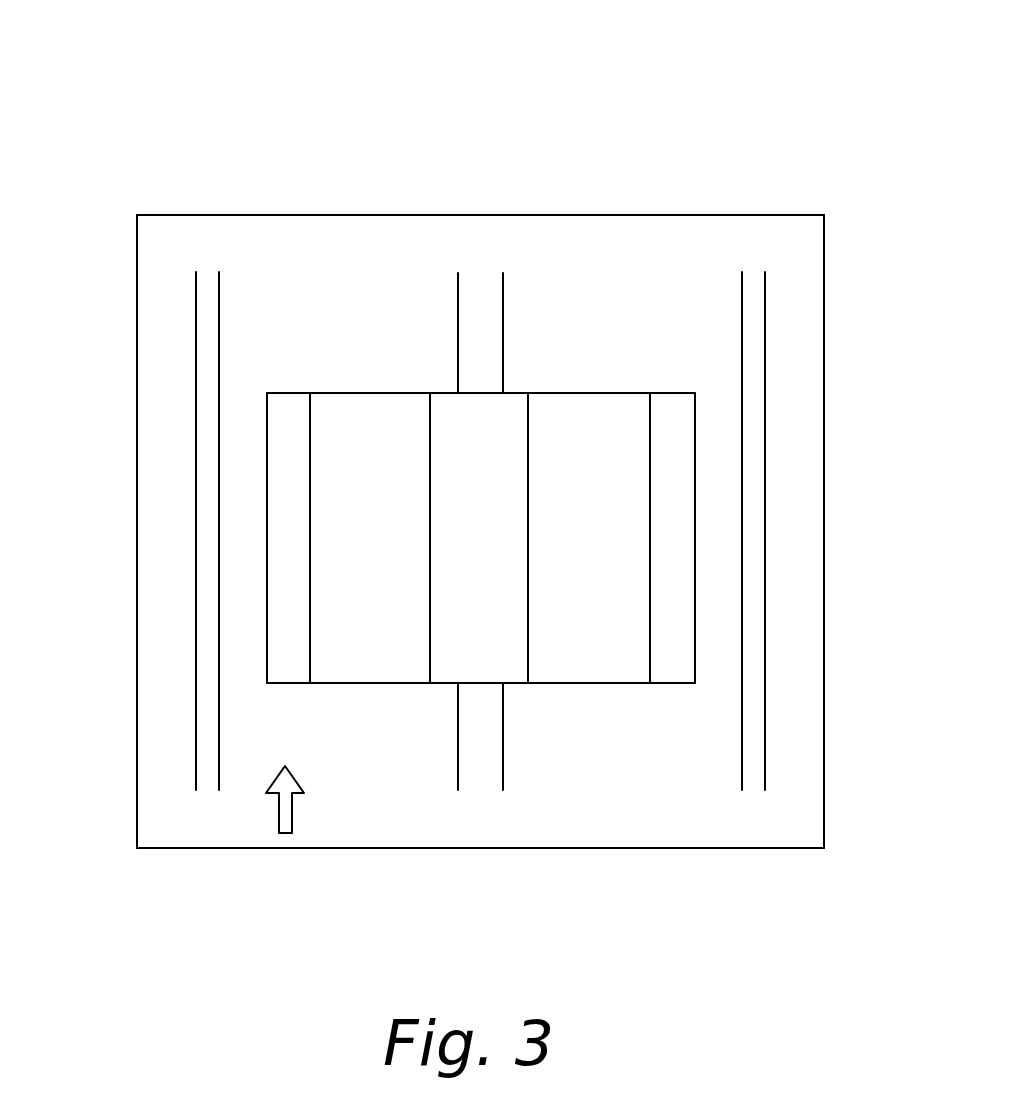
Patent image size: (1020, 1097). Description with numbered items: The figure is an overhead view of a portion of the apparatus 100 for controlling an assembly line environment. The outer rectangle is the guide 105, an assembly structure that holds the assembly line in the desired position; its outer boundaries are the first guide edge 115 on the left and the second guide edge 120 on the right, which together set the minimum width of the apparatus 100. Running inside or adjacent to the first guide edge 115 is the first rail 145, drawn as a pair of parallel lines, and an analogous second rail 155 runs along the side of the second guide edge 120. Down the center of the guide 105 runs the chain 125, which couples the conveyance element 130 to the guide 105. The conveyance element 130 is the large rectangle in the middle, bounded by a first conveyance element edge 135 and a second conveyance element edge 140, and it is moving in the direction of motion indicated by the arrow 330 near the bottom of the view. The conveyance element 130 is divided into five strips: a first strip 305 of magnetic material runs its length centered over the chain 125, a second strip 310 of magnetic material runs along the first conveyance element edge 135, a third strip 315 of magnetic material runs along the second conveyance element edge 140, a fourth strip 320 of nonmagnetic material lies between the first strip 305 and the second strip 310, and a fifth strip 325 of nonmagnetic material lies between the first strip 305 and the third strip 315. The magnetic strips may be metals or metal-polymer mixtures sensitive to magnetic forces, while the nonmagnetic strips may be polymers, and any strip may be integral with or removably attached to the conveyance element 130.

The apparatus 100 is at (470, 430).
The guide 105 is at (470, 493).
The first guide edge 115 is at (137, 281).
The second guide edge 120 is at (824, 297).
The chain 125 is at (458, 312).
The conveyance element 130 is at (475, 533).
The first conveyance element edge 135 is at (267, 558).
The second conveyance element edge 140 is at (695, 543).
The first rail 145 is at (196, 441).
The second rail 155 is at (765, 466).
The first strip 305 is at (512, 418).
The second strip 310 is at (290, 422).
The third strip 315 is at (672, 427).
The fourth strip 320 is at (377, 430).
The fifth strip 325 is at (590, 435).
The arrow 330 is at (292, 813).